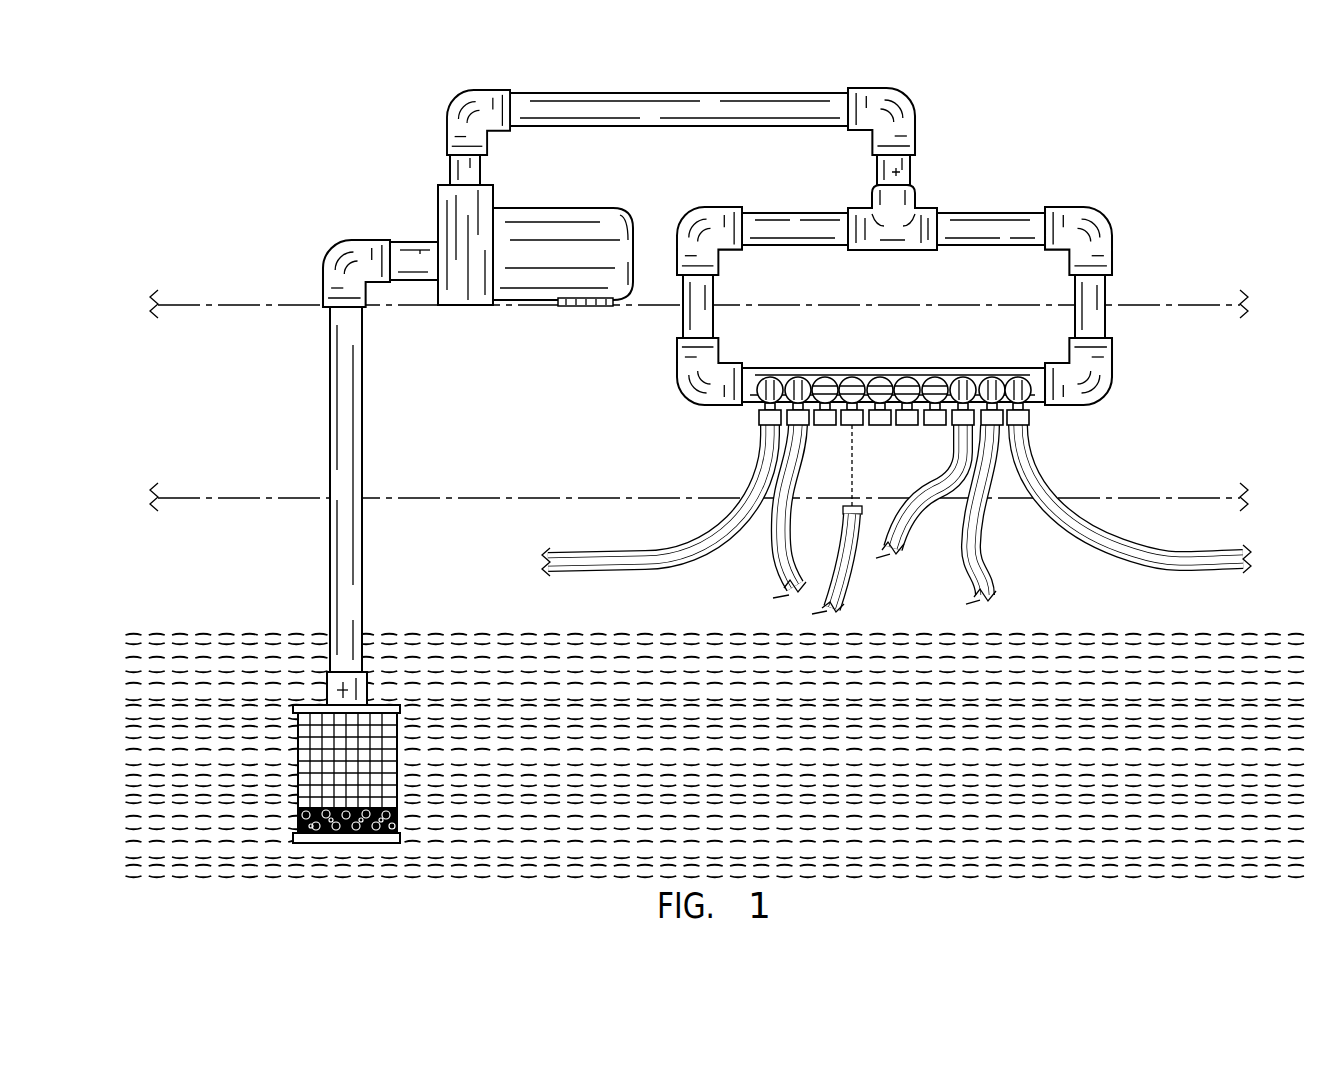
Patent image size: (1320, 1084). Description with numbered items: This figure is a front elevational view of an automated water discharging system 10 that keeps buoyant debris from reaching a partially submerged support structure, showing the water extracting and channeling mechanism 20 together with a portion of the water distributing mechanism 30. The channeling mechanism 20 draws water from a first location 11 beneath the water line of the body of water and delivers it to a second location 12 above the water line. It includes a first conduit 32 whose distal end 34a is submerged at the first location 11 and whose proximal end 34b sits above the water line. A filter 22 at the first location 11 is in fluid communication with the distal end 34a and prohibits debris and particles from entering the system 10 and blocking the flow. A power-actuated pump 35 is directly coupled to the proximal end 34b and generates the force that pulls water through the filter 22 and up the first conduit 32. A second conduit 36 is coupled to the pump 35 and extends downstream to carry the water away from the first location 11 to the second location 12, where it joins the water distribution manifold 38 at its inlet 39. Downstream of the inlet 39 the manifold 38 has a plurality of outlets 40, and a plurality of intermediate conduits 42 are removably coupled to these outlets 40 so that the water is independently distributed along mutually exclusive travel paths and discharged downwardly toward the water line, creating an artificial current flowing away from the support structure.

The automated water discharging system 10 is at (210, 200).
The first location 11 is at (210, 670).
The second location 12 is at (472, 320).
The water extracting and channeling mechanism 20 is at (502, 272).
The filter 22 is at (292, 712).
The water distributing mechanism 30 is at (896, 381).
The first conduit 32 is at (347, 422).
The distal end 34a is at (356, 665).
The proximal end 34b is at (332, 320).
The power-actuated pump 35 is at (560, 228).
The second conduit 36 is at (708, 110).
The water distribution manifold 38 is at (997, 228).
The inlet 39 is at (900, 171).
The outlets 40 is at (882, 442).
The intermediate conduits 42 is at (713, 527).